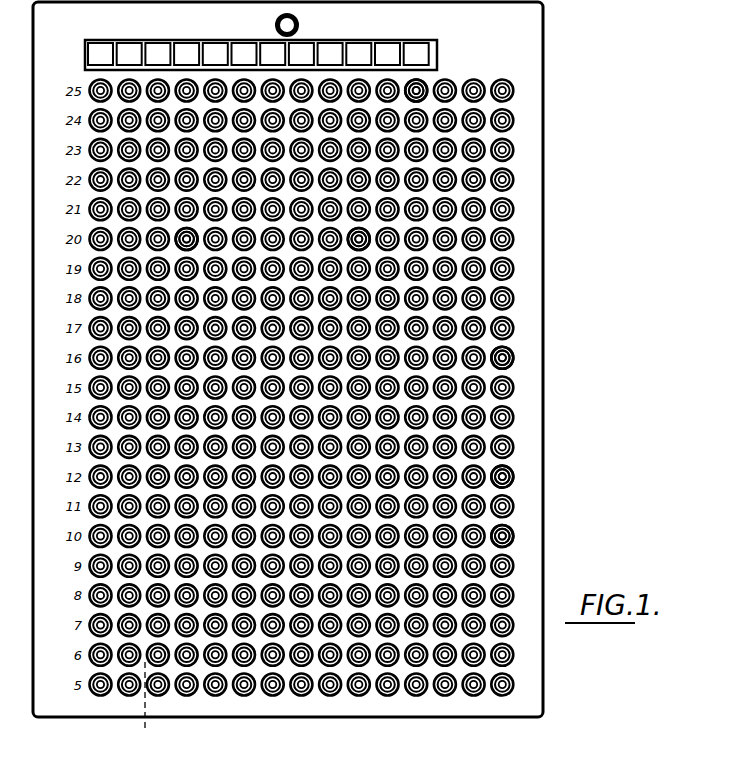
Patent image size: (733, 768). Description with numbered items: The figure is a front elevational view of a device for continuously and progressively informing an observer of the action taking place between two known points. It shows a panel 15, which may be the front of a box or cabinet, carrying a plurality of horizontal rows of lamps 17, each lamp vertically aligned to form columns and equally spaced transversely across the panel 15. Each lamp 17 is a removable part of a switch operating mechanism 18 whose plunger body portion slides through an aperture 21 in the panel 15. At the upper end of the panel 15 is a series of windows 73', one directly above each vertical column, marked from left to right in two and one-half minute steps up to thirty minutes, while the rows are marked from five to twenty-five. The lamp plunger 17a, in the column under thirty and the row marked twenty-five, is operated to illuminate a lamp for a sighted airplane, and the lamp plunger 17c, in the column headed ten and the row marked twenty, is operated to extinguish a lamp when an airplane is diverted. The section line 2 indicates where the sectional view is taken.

The panel 15 is at (543, 430).
The windows 73' is at (280, 55).
The lamps 17 is at (366, 238).
The lamp plunger 17a is at (430, 84).
The lamp plunger 17c is at (186, 237).
The aperture 21 is at (512, 354).
The switch operating mechanism 18 is at (510, 528).
The section line 2- 2 is at (128, 669).